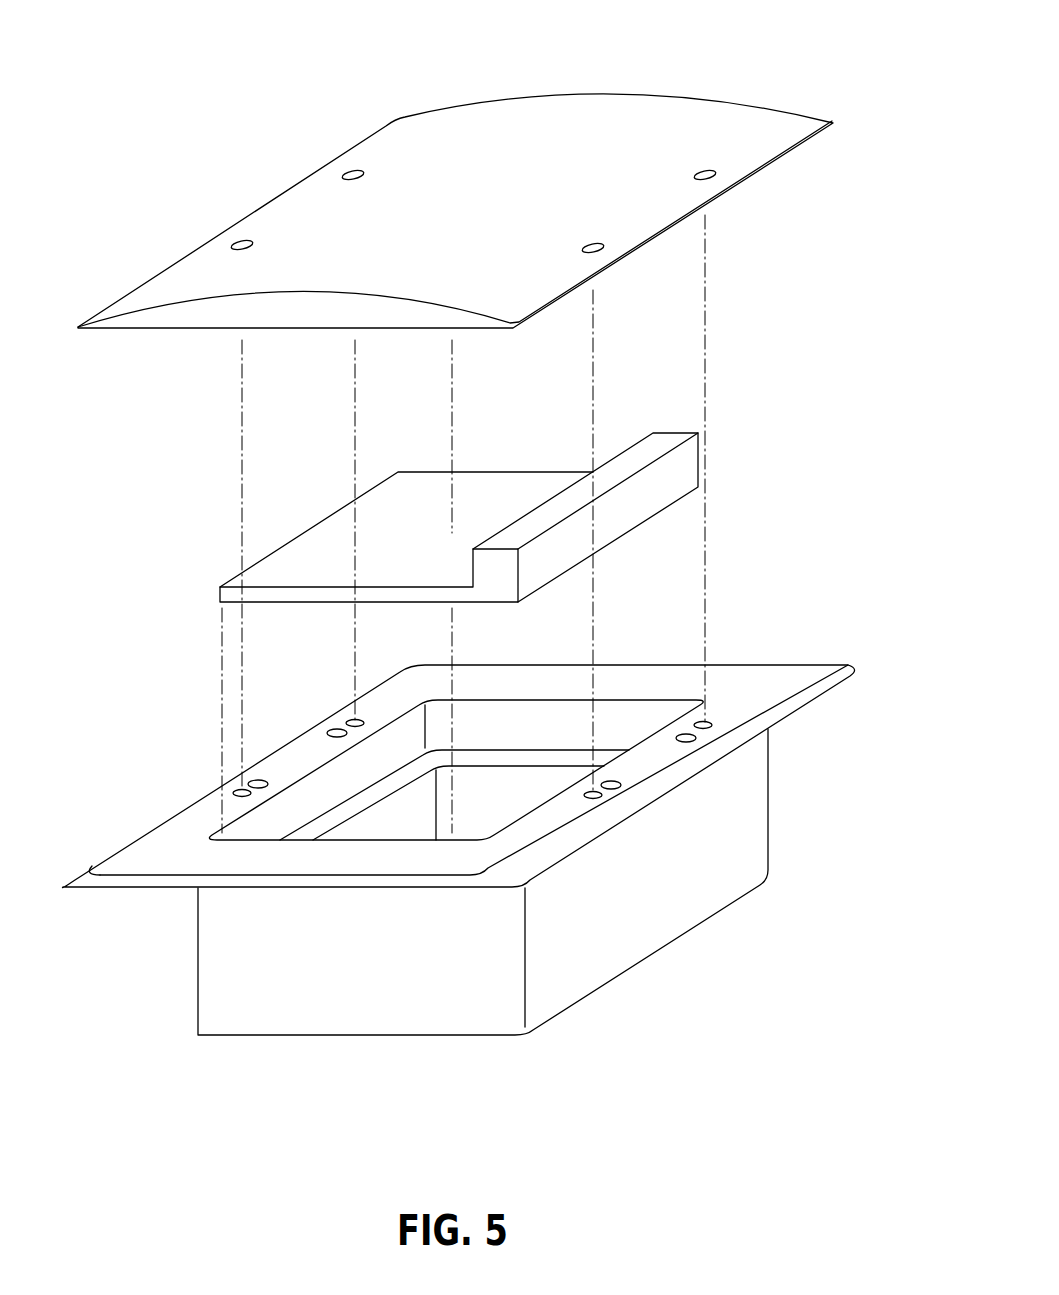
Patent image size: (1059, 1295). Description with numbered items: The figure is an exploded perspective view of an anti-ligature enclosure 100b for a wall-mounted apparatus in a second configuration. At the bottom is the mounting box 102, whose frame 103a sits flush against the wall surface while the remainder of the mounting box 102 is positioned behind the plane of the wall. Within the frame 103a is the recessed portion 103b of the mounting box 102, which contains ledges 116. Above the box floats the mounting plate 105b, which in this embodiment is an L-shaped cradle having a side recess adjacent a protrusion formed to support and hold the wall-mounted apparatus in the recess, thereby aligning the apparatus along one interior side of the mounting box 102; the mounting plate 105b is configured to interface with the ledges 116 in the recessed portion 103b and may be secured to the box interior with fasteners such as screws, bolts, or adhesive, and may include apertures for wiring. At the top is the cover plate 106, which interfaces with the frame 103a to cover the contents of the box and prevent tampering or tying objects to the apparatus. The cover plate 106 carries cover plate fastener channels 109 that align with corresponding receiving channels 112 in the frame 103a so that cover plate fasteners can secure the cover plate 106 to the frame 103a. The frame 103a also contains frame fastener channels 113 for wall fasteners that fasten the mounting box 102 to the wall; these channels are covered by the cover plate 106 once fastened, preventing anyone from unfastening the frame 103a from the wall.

The anti-ligature enclosure 100b is at (776, 74).
The mounting box 102 is at (198, 938).
The frame 103a is at (770, 684).
The recessed portion 103b is at (528, 795).
The mounting plate 105b is at (510, 476).
The cover plate 106 is at (524, 97).
The cover plate fastener channels 109 is at (343, 171).
The receiving channels 112 is at (353, 719).
The frame fastener channels 113 is at (337, 729).
The ledges 116 is at (505, 758).